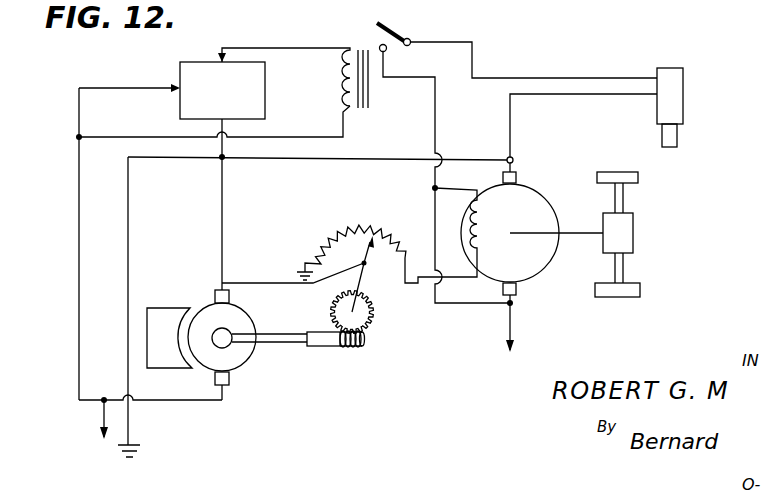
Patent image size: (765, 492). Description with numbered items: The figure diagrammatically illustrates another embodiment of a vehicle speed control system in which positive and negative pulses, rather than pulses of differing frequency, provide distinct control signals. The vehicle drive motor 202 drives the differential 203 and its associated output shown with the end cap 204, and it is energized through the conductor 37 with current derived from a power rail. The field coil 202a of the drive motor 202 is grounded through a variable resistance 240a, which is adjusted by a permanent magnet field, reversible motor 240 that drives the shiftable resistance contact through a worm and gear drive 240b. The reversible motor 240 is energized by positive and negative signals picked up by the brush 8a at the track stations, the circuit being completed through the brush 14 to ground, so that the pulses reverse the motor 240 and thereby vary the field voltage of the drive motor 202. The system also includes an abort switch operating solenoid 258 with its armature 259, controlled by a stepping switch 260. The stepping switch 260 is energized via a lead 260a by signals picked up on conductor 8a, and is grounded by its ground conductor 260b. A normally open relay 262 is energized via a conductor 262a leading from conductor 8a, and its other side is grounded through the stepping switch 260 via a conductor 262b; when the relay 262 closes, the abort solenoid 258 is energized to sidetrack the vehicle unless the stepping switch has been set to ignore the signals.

The brush conductor 8a is at (106, 445).
The brush 14 is at (135, 446).
The conductor 37 is at (513, 322).
The vehicle drive motor 202 is at (533, 184).
The field coil 202a is at (485, 259).
The differential 203 is at (633, 240).
The shaft end cap 204 is at (638, 178).
The permanent magnet field reversible motor 240 is at (249, 313).
The variable resistance 240a is at (393, 186).
The worm and gear drive 240b is at (367, 330).
The abort switch operating solenoid 258 is at (672, 82).
The armature 259 is at (677, 138).
The stepping switch 260 is at (266, 82).
The lead 260a is at (143, 88).
The stepping switch ground conductor 260b is at (220, 124).
The relay 262 is at (352, 108).
The conductor 262a is at (270, 137).
The conductor 262b is at (316, 48).